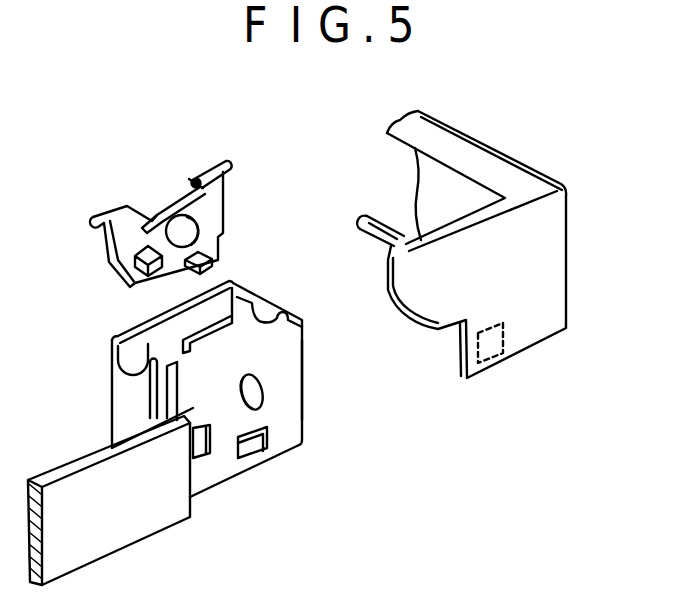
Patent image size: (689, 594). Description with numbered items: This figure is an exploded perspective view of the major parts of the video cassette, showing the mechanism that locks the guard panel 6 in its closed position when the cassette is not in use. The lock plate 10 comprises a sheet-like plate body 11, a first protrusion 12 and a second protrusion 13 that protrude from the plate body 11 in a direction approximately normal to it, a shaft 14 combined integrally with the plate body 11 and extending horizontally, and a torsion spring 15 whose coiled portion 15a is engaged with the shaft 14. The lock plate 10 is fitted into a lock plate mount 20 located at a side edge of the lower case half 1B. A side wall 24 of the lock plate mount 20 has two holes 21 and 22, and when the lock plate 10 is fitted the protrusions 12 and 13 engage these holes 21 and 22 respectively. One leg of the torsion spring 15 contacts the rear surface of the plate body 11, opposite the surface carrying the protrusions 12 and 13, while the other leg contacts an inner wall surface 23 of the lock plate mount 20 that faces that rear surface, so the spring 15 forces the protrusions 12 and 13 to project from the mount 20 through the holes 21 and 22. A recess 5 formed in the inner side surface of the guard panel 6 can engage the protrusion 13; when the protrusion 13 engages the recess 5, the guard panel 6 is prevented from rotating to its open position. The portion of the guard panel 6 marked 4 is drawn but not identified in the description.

The lock plate 10 is at (207, 146).
The plate body 11 is at (213, 203).
The first protrusion 12 is at (127, 278).
The second protrusion 13 is at (213, 268).
The shaft 14 is at (186, 181).
The torsion spring 15 is at (188, 181).
The coiled portion 15a is at (190, 179).
The lock plate mount 20 is at (127, 397).
The hole 21 is at (196, 458).
The hole 22 is at (253, 462).
The inner wall surface 23 is at (147, 348).
The side wall 24 is at (280, 370).
The lower case half 1B is at (218, 505).
The top flange 4 is at (458, 145).
The recess 5 is at (490, 366).
The guard panel 6 is at (592, 216).